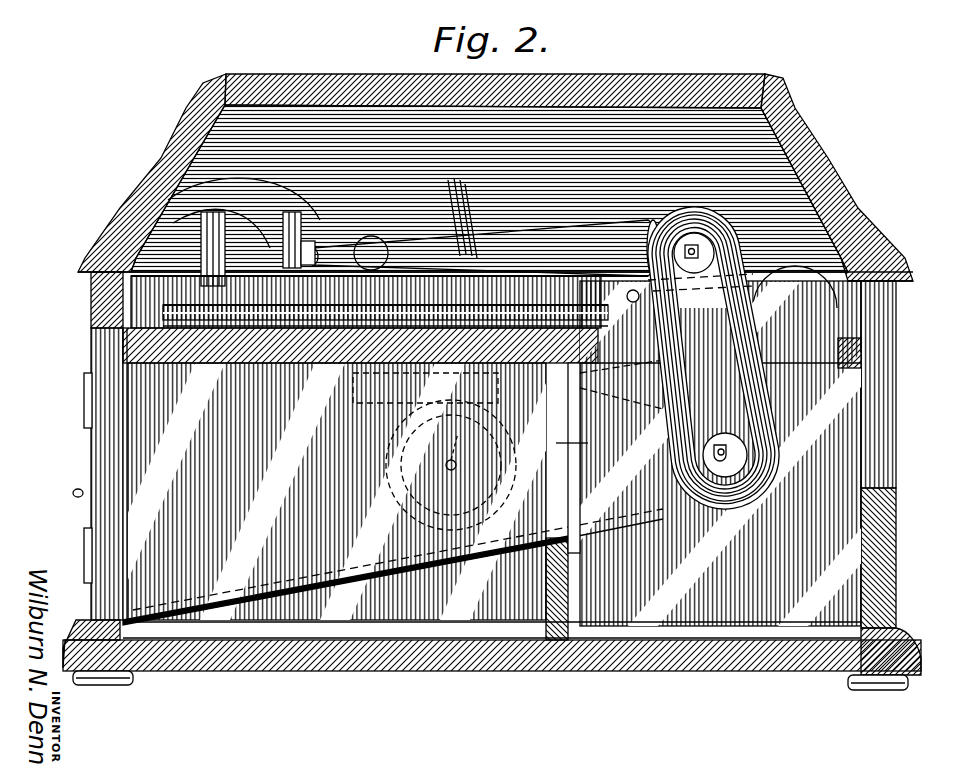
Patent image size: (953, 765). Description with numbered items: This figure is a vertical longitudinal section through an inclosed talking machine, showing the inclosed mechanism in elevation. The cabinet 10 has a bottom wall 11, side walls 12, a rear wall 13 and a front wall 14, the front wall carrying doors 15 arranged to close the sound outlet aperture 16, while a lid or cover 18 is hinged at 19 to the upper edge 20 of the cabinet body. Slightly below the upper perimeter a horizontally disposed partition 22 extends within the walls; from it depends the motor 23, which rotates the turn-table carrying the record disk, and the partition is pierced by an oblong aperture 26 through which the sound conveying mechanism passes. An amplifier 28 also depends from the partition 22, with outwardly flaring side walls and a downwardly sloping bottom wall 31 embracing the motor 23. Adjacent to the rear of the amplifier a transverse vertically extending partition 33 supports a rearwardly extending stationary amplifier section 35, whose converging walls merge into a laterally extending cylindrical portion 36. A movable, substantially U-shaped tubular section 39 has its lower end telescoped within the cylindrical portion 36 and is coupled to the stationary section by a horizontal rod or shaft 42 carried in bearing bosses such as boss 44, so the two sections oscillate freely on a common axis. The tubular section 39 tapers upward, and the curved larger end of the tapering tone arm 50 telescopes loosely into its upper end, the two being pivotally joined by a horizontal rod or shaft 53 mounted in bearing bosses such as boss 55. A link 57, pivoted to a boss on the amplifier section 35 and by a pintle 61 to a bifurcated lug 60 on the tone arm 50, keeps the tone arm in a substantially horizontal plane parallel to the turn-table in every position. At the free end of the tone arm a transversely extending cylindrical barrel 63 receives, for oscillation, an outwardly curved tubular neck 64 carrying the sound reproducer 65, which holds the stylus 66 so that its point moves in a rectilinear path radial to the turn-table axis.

The cabinet 10 is at (716, 668).
The bottom wall 11 is at (573, 653).
The side walls 12 is at (636, 453).
The rear wall 13 is at (878, 522).
The front wall 14 is at (107, 322).
The doors 15 is at (90, 460).
The sound outlet aperture 16 is at (83, 368).
The lid or cover 18 is at (664, 75).
The hinge 19 is at (872, 272).
The upper edge 20 is at (97, 268).
The horizontal partition 22 is at (385, 306).
The motor 23 is at (434, 451).
The oblong aperture 26 is at (853, 345).
The amplifier 28 is at (332, 491).
The bottom wall of amplifier 31 is at (390, 568).
The vertically extending partition 33 is at (557, 570).
The stationary amplifier section 35 is at (610, 515).
The cylindrical portion 36 is at (773, 458).
The movable tubular section 39 is at (668, 350).
The horizontal rod or shaft 42 is at (720, 446).
The bearing boss 44 is at (740, 430).
The tone arm 50 is at (637, 232).
The horizontal rod or shaft 53 is at (735, 205).
The bearing boss 55 is at (692, 246).
The link 57 is at (650, 408).
The bifurcated lug 60 is at (620, 292).
The pintle 61 is at (636, 232).
The cylindrical barrel 63 is at (170, 152).
The tubular neck 64 is at (165, 173).
The sound reproducer 65 is at (140, 200).
The stylus 66 is at (120, 220).